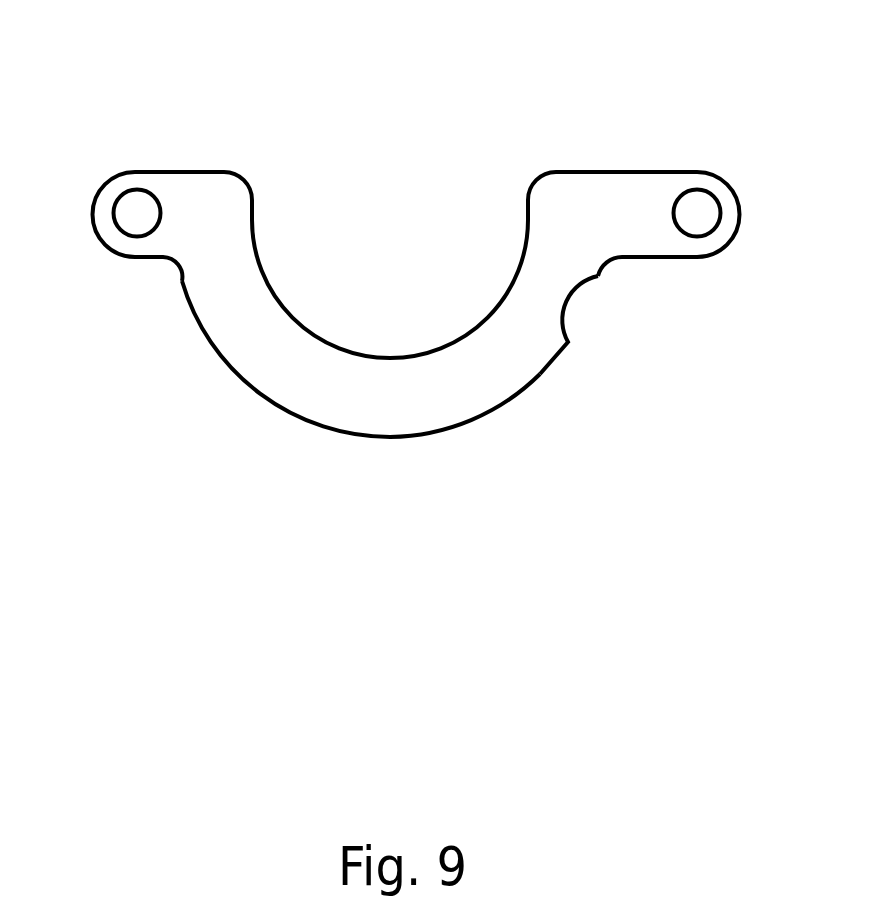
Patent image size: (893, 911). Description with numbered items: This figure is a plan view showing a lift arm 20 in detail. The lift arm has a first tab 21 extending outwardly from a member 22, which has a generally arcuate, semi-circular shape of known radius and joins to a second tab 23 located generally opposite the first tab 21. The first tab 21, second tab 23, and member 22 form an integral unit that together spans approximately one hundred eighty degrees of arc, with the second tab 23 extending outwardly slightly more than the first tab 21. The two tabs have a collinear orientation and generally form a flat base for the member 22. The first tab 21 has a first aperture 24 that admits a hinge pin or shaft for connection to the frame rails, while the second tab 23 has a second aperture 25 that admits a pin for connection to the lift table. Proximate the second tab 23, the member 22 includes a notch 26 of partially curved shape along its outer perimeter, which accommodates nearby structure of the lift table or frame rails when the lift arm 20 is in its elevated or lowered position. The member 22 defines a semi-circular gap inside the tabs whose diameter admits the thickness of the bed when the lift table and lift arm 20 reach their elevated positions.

The lift arm 20 is at (380, 98).
The first tab 21 is at (188, 172).
The member 22 is at (322, 430).
The second tab 23 is at (602, 172).
The first aperture 24 is at (137, 225).
The second aperture 25 is at (692, 222).
The notch 26 is at (578, 312).